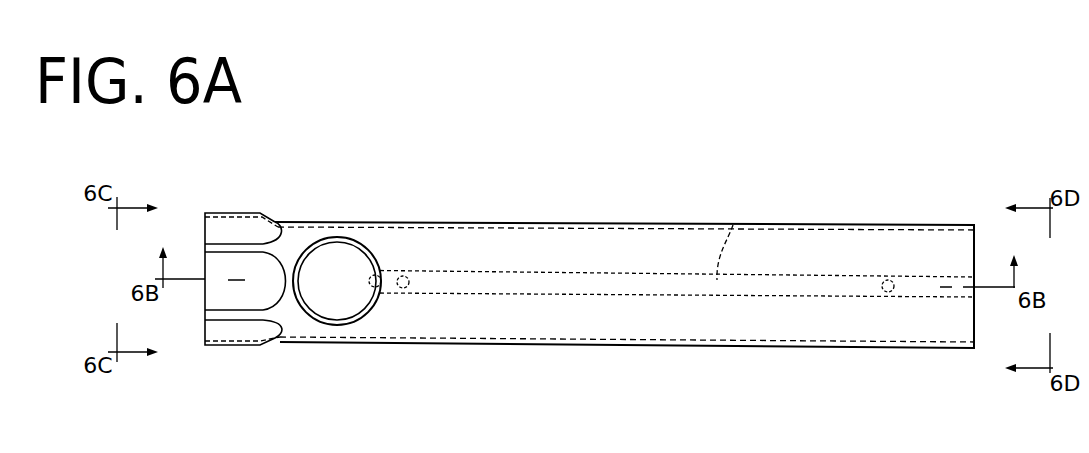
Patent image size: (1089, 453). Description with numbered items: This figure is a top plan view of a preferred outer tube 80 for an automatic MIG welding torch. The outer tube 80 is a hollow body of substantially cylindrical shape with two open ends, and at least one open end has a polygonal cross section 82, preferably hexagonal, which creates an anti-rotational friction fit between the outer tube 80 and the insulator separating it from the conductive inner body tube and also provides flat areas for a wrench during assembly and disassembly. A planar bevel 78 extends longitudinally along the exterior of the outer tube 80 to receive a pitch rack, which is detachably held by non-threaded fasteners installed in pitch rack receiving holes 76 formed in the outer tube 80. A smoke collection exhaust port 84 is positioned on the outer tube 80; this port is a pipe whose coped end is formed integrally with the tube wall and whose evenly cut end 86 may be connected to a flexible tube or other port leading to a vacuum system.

The pitch rack receiving holes 76 is at (405, 287).
The planar bevel 78 is at (733, 222).
The outer tube 80 is at (590, 205).
The polygonal cross section 82 is at (222, 233).
The smoke collection exhaust port 84 is at (354, 230).
The evenly cut end 86 is at (368, 258).